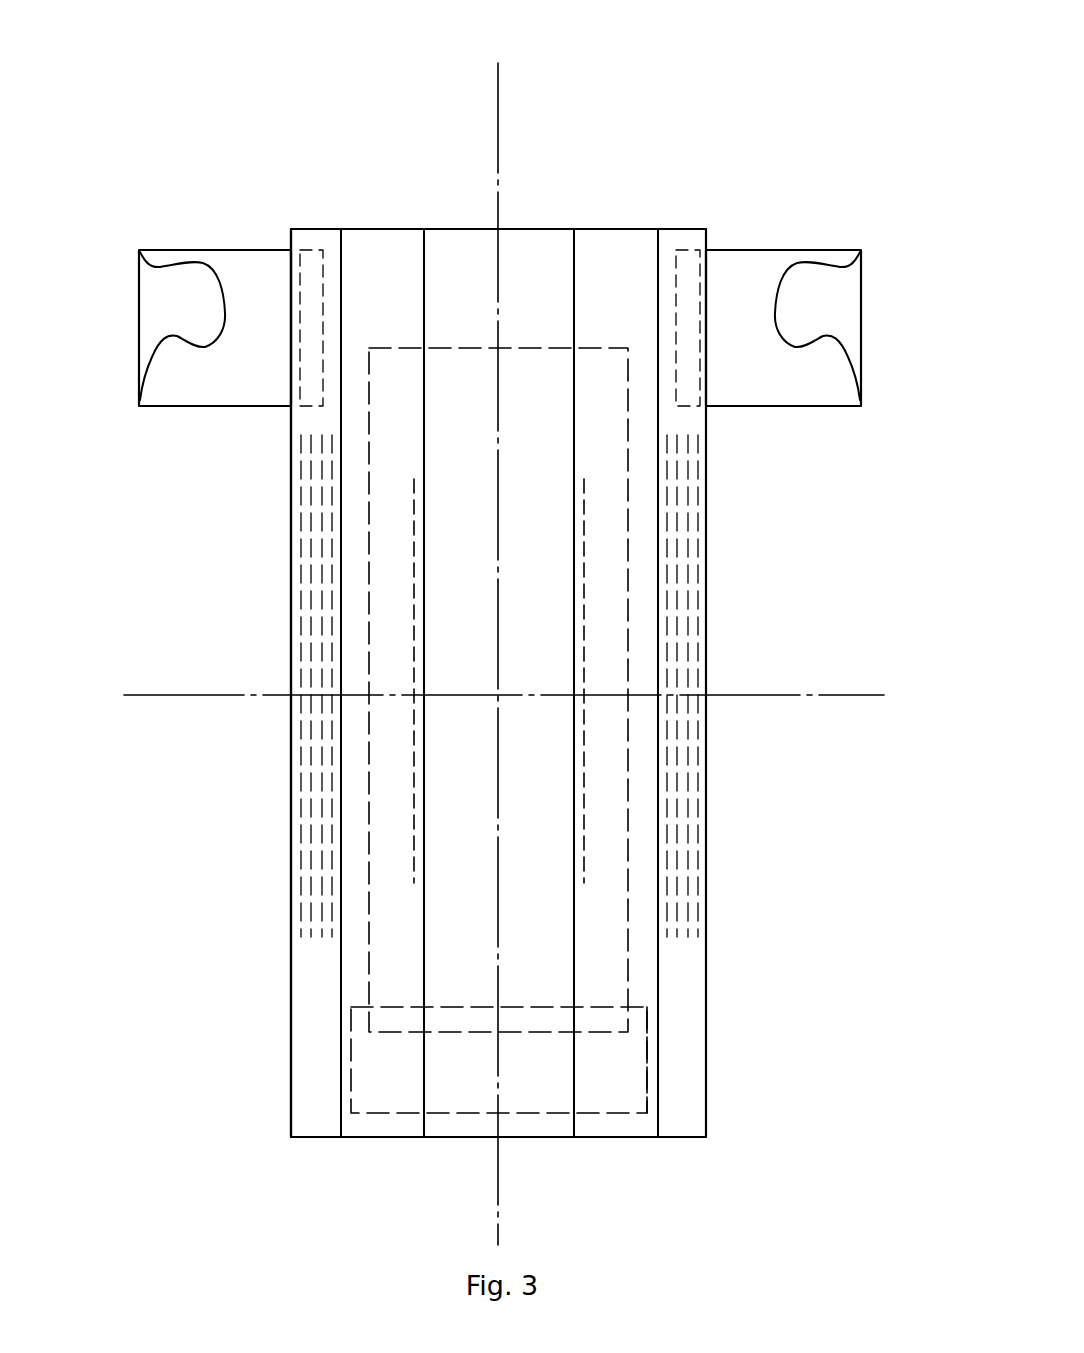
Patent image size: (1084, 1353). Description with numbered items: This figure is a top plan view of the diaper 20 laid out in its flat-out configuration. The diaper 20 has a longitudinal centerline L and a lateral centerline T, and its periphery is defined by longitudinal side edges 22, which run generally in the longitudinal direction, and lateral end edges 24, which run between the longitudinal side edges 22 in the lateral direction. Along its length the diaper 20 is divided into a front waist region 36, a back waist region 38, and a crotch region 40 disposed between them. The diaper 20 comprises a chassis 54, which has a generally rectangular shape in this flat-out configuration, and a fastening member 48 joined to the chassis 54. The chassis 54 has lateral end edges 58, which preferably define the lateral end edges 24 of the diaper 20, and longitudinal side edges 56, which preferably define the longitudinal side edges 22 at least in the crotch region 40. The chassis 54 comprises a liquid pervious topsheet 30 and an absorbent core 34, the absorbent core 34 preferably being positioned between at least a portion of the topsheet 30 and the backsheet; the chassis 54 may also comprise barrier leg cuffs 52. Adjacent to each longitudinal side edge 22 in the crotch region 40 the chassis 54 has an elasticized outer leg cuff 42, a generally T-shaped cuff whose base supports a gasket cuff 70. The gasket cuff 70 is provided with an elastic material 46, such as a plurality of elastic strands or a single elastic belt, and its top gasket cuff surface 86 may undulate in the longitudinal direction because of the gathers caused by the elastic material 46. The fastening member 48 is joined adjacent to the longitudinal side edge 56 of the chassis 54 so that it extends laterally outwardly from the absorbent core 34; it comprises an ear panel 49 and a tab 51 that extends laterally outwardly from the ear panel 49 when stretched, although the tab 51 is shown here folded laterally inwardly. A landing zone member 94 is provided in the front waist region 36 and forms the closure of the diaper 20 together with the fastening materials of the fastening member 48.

The diaper 20 is at (716, 143).
The longitudinal side edges 22 is at (291, 915).
The lateral end edges 24 is at (553, 229).
The topsheet 30 is at (447, 278).
The absorbent core 34 is at (630, 996).
The front waist region 36 is at (243, 1113).
The back waist region 38 is at (340, 212).
The crotch region 40 is at (710, 768).
The elasticized outer leg cuff 42 is at (288, 640).
The elastic material 46 is at (300, 742).
The fastening member 48 is at (222, 250).
The ear panel 49 is at (197, 385).
The tab 51 is at (170, 306).
The barrier leg cuffs 52 is at (584, 790).
The chassis 54 is at (272, 1013).
The longitudinal side edges of the chassis 56 is at (291, 568).
The lateral end edges of the chassis 58 is at (486, 229).
The gasket cuff 70 is at (288, 825).
The top gasket cuff surface 86 is at (312, 525).
The landing zone member 94 is at (638, 1116).
The longitudinal centerline L is at (500, 100).
The lateral centerline T is at (870, 695).